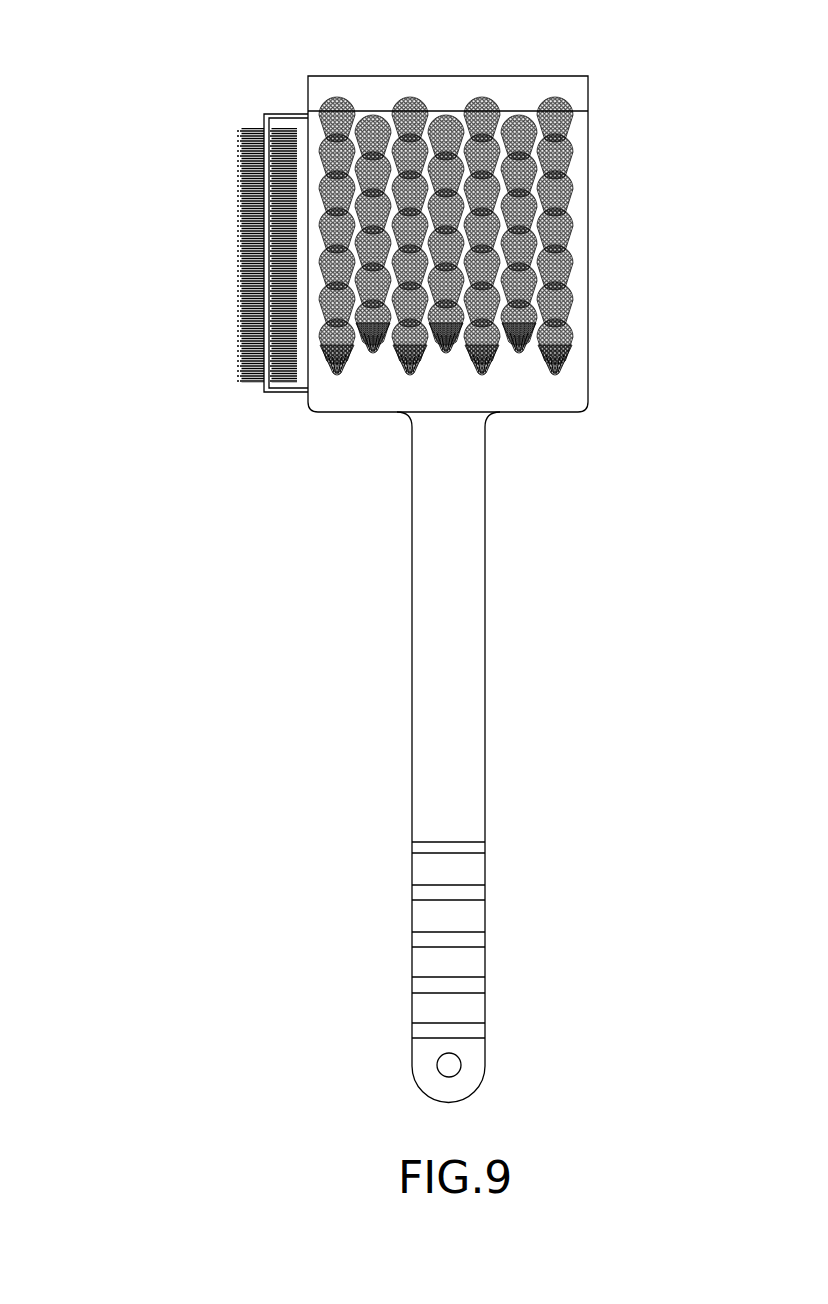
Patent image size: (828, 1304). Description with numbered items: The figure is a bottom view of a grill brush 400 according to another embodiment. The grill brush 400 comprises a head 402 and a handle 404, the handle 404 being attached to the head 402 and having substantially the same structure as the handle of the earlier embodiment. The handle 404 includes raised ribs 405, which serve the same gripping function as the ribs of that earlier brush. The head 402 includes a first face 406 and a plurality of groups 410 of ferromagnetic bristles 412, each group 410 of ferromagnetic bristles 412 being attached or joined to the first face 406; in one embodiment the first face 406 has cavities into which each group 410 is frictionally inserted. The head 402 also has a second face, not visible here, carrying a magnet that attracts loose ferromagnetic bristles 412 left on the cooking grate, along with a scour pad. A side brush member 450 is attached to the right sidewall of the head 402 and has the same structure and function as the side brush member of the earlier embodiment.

The grill brush 400 is at (172, 488).
The head 402 is at (590, 298).
The handle 404 is at (412, 673).
The raised ribs 405 is at (475, 848).
The first face 406 is at (344, 392).
The groups of ferromagnetic bristles 410 is at (337, 102).
The ferromagnetic bristles 412 is at (486, 100).
The side brush member 450 is at (240, 265).